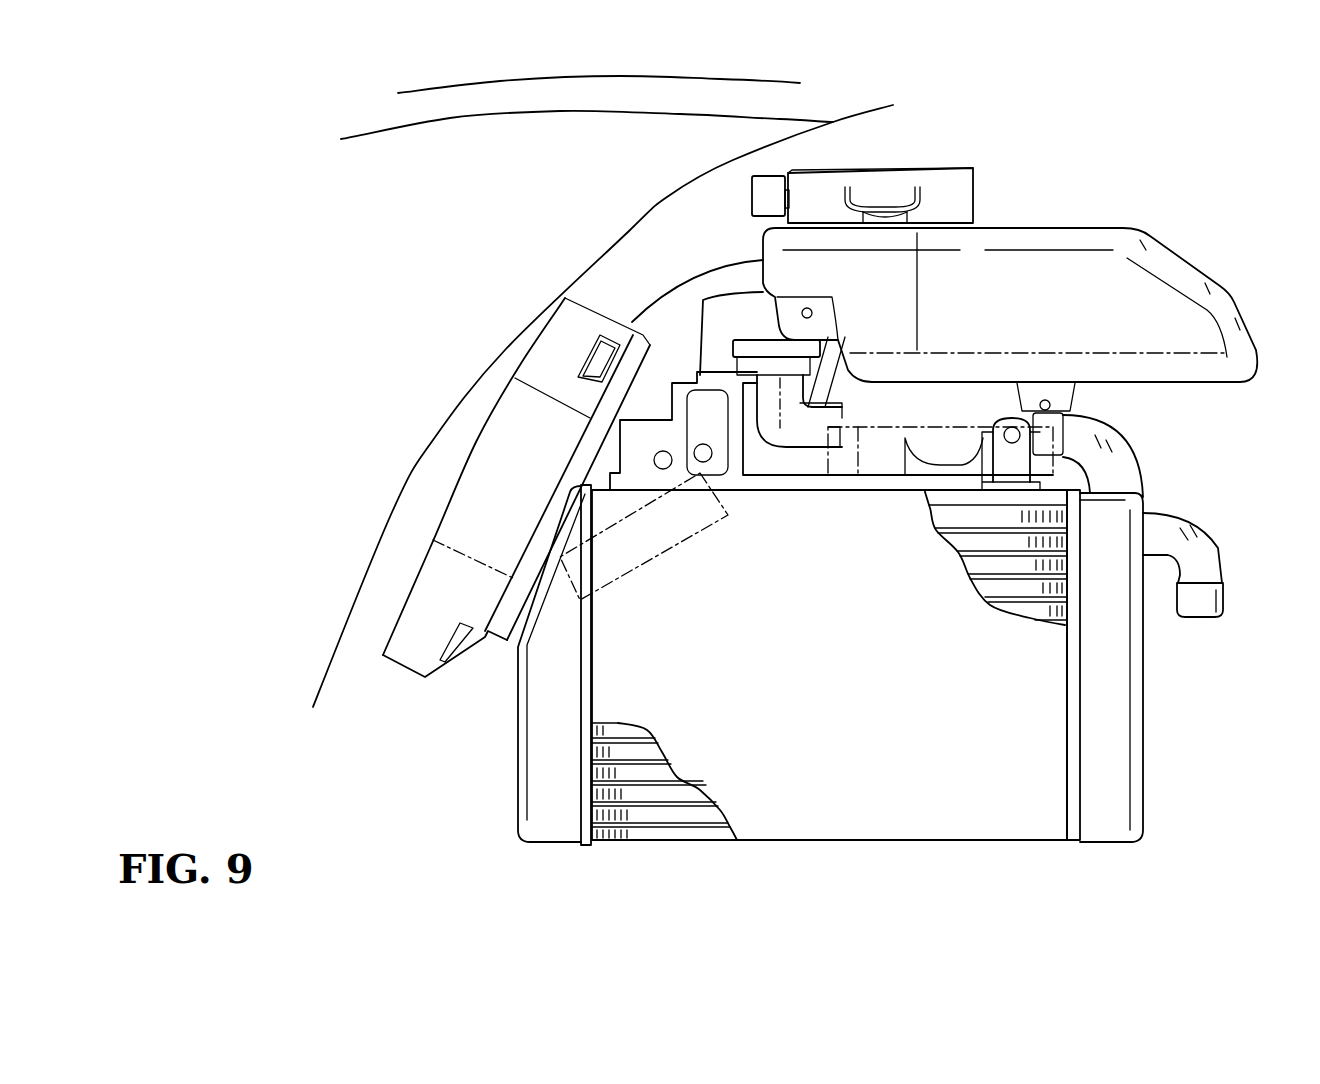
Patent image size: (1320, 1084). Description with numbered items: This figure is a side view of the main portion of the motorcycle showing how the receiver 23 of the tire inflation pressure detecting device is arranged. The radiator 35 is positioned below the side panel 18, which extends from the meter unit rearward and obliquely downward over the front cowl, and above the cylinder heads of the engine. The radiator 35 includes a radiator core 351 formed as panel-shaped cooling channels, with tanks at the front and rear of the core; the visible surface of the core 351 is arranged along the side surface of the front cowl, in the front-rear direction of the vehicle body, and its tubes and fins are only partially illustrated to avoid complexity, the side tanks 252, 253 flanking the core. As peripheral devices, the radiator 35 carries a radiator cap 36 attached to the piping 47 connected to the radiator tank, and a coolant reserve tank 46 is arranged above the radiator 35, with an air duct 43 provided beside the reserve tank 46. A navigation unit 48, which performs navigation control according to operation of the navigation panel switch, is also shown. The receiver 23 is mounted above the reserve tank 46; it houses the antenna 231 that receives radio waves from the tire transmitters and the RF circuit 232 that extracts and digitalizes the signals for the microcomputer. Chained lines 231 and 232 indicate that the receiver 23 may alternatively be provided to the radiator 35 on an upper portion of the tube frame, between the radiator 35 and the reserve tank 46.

The side panel 18 is at (665, 202).
The air duct 43 is at (727, 265).
The receiver 23 is at (958, 198).
The coolant reserve tank 46 is at (1155, 259).
The radiator cap 36 is at (778, 338).
The navigation unit 48 is at (463, 452).
The piping 47 is at (1113, 448).
The antenna 231 is at (827, 463).
The RF circuit 232 is at (660, 555).
The right side tank 252 is at (1117, 712).
The left side tank 253 is at (535, 763).
The radiator 35 is at (1130, 801).
The radiator core 351 is at (667, 830).